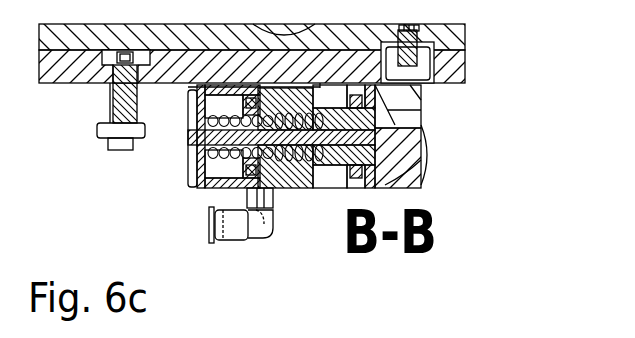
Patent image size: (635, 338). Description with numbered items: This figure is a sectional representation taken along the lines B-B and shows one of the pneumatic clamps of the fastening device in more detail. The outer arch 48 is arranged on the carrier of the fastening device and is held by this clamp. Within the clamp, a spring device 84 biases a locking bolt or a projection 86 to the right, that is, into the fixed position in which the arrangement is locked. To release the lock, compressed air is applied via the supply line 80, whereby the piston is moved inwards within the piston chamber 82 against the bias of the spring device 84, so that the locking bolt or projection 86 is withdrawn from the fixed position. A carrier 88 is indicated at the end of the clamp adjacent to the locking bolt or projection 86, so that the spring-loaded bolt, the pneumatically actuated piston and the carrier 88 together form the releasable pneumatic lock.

The outer arch 48 is at (313, 24).
The supply line 80 is at (230, 230).
The piston chamber 82 is at (196, 160).
The spring device 84 is at (208, 116).
The locking bolt or projection 86 is at (415, 148).
The carrier 88 is at (422, 179).